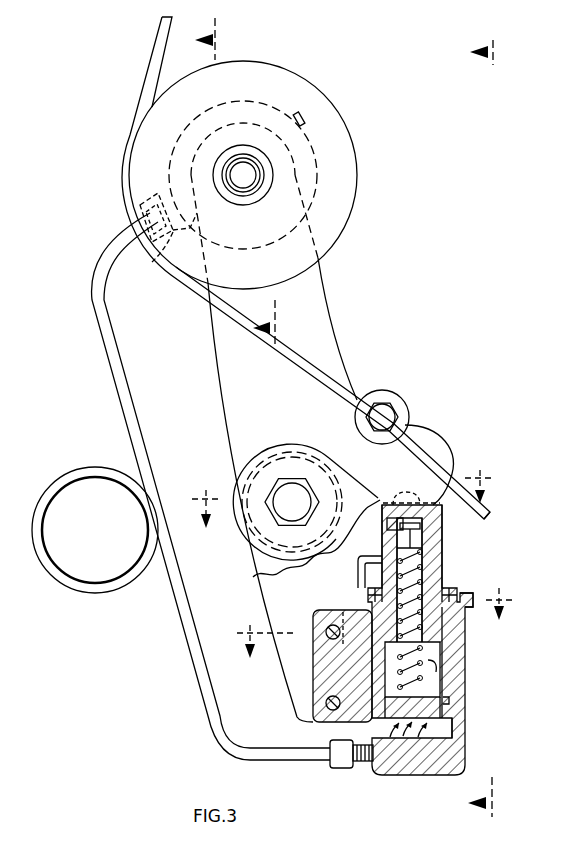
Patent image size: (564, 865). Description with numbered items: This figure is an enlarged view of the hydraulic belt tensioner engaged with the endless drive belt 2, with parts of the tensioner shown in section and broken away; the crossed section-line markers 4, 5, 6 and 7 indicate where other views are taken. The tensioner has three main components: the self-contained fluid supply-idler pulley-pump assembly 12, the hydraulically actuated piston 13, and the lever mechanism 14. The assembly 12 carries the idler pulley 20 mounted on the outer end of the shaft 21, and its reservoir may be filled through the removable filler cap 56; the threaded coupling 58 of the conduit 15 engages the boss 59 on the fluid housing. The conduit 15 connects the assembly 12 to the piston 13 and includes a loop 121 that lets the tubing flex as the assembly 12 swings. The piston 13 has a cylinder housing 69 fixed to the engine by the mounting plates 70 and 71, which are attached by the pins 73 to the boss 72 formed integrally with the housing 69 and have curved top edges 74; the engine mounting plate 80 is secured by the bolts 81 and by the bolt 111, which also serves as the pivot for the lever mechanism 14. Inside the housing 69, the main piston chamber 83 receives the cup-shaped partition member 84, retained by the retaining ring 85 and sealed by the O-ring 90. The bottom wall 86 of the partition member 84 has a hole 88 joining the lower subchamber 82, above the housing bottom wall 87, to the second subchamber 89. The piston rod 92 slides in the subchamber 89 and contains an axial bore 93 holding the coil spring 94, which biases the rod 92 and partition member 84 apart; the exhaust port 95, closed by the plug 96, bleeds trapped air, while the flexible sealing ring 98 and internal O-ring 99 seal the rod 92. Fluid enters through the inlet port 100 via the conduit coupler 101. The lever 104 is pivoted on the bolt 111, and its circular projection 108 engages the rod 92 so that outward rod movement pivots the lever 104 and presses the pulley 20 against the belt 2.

The belt 2 is at (150, 70).
The section line 4- 4 is at (491, 428).
The section line 5- 5 is at (244, 181).
The section line 6- 6 is at (343, 490).
The section line 7- 7 is at (374, 613).
The fluid supply-idler pulley-pump assembly 12 is at (273, 159).
The hydraulic piston 13 is at (426, 659).
The lever mechanism 14 is at (424, 424).
The conduit 15 is at (118, 390).
The idler pulley 20 is at (357, 160).
The shaft 21 is at (252, 185).
The filler cap 56 is at (305, 117).
The threaded coupling 58 is at (150, 203).
The boss 59 is at (185, 236).
The cylinder housing 69 is at (465, 682).
The mounting plate 70 is at (258, 455).
The mounting plate 71 is at (270, 595).
The boss 72 is at (310, 652).
The pins 73 is at (322, 622).
The curved top edges 74 is at (272, 442).
The engine mounting plate 80 is at (376, 392).
The bolts 81 is at (390, 413).
The lower subchamber 82 is at (375, 727).
The main piston chamber 83 is at (458, 740).
The partition member 84 is at (454, 652).
The retaining ring 85 is at (470, 615).
The bottom wall 86 is at (450, 715).
The bottom wall 87 is at (407, 770).
The hole 88 is at (425, 770).
The second subchamber 89 is at (445, 667).
The O-ring 90 is at (450, 702).
The piston rod 92 is at (437, 539).
The axial bore 93 is at (433, 560).
The coil spring 94 is at (358, 568).
The fluid exhaust port 95 is at (472, 517).
The plug 96 is at (370, 503).
The flexible sealing ring 98 is at (366, 583).
The internal O-ring 99 is at (360, 627).
The inlet port 100 is at (380, 767).
The conduit coupler 101 is at (345, 767).
The lever 104 is at (313, 287).
The circular projection 108 is at (430, 440).
The bolt 111 is at (282, 507).
The loop 121 is at (83, 590).